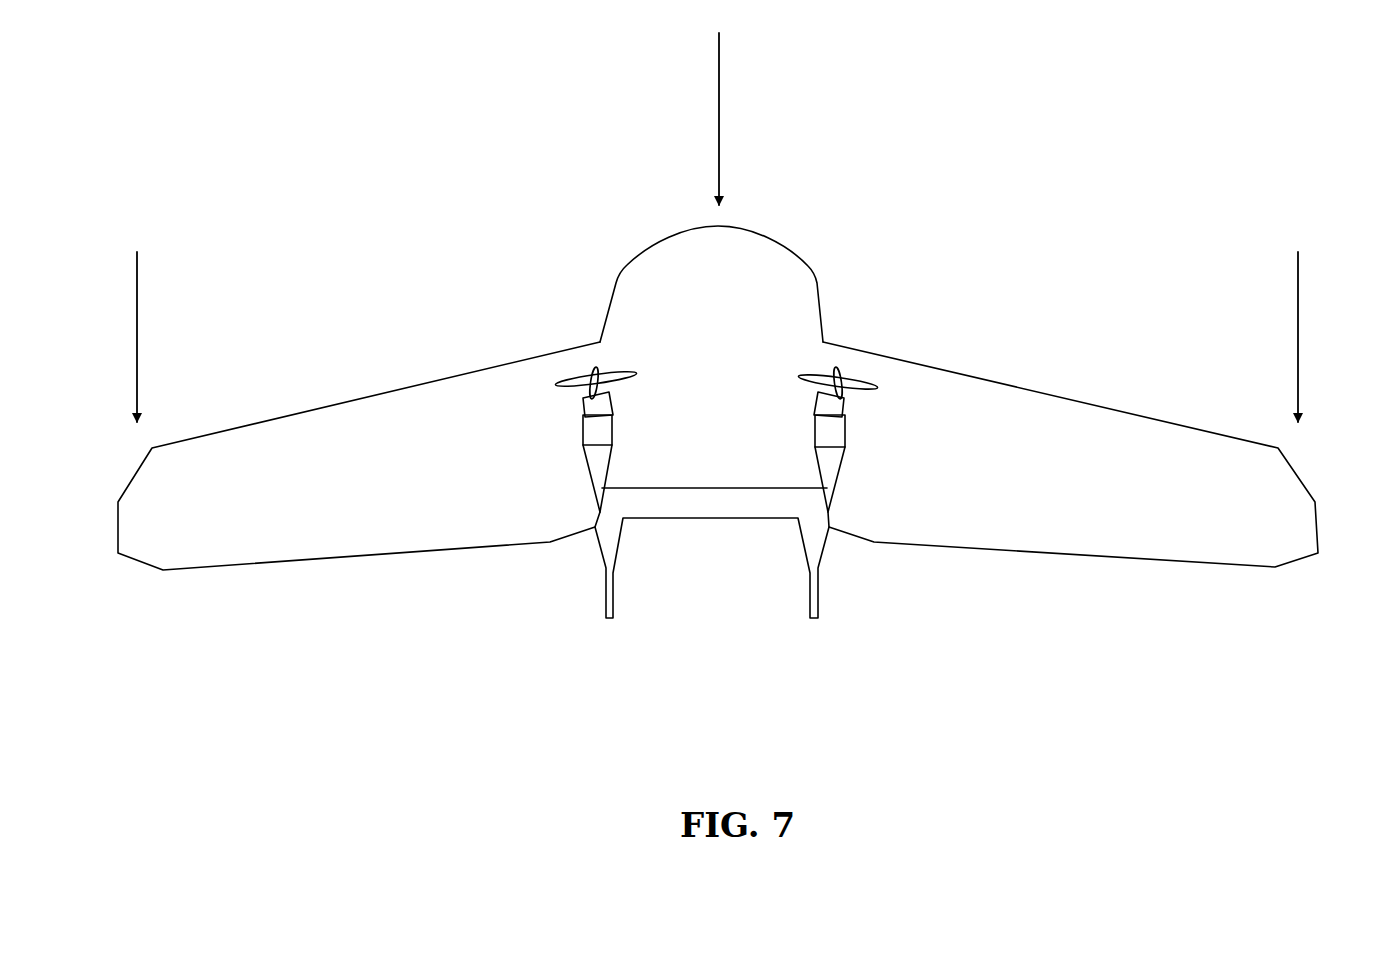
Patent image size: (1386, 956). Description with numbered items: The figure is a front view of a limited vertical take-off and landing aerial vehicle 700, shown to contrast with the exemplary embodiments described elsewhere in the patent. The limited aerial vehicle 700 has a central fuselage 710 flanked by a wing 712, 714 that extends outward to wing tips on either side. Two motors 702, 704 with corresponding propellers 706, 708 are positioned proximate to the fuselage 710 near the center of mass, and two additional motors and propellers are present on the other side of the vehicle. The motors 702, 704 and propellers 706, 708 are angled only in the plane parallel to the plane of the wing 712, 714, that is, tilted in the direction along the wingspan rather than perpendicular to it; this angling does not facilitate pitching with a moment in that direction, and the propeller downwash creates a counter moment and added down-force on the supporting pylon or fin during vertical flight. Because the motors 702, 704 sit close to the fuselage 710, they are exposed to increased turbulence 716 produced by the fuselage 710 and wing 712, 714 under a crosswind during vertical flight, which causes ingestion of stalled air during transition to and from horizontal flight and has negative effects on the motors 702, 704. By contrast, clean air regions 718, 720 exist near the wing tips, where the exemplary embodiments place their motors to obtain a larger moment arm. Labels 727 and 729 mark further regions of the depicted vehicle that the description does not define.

The limited VTOL aerial vehicle 700 is at (1276, 126).
The motor 702 is at (583, 410).
The motor 704 is at (847, 408).
The propeller 706 is at (571, 382).
The propeller 708 is at (866, 378).
The fuselage 710 is at (652, 256).
The wing 712 is at (380, 545).
The wing 714 is at (1022, 544).
The increased turbulence 716 is at (719, 126).
The clean air region 718 is at (137, 330).
The clean air region 720 is at (1298, 330).
The airflow region 727 is at (540, 408).
The airflow region between motors 729 is at (677, 431).